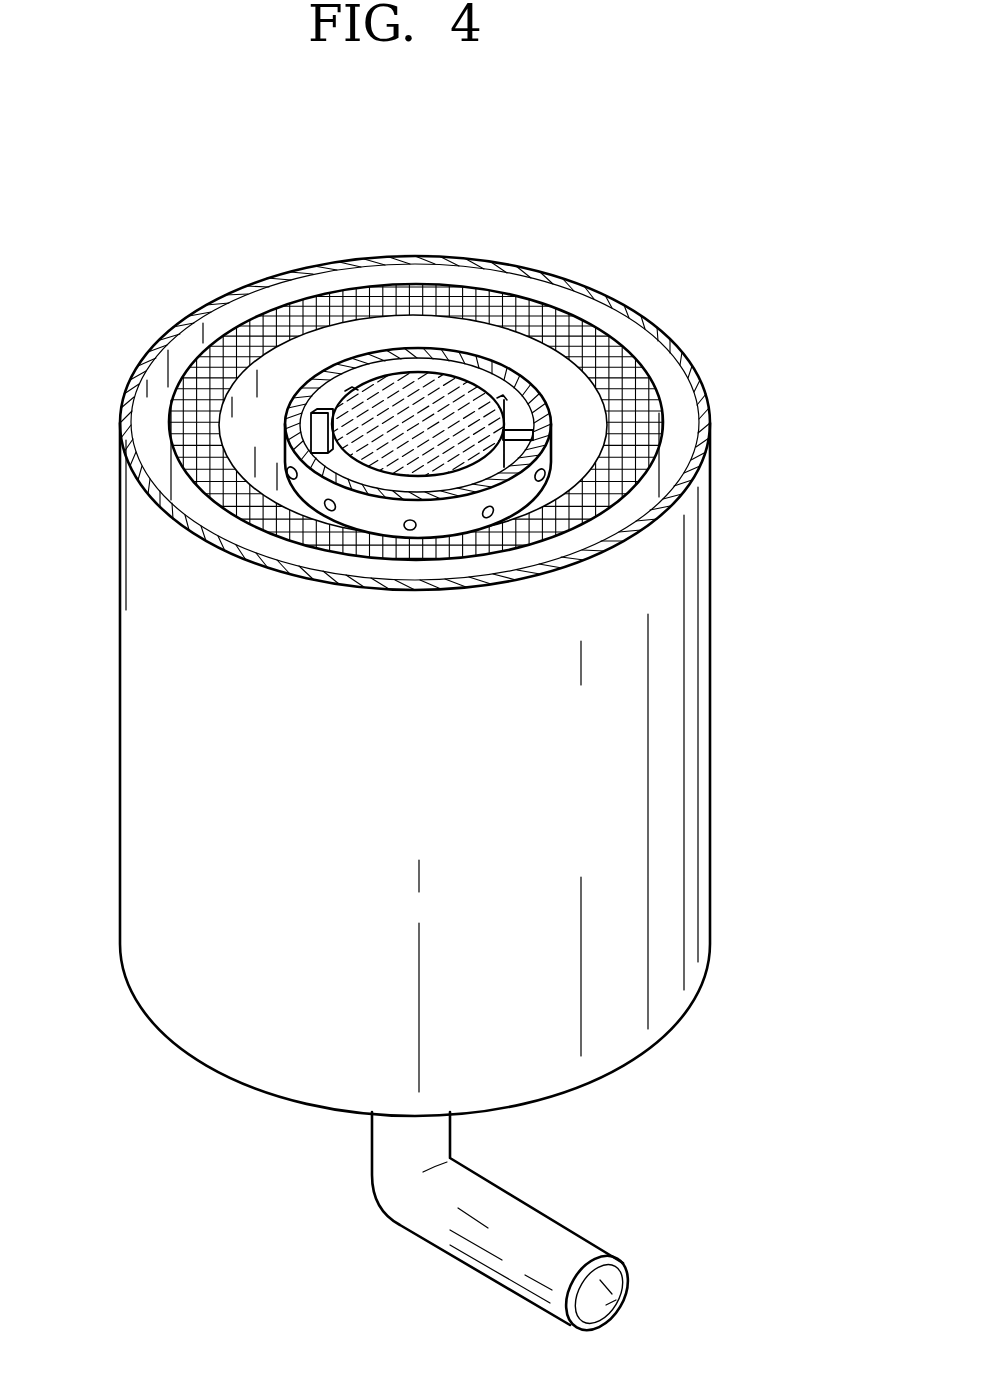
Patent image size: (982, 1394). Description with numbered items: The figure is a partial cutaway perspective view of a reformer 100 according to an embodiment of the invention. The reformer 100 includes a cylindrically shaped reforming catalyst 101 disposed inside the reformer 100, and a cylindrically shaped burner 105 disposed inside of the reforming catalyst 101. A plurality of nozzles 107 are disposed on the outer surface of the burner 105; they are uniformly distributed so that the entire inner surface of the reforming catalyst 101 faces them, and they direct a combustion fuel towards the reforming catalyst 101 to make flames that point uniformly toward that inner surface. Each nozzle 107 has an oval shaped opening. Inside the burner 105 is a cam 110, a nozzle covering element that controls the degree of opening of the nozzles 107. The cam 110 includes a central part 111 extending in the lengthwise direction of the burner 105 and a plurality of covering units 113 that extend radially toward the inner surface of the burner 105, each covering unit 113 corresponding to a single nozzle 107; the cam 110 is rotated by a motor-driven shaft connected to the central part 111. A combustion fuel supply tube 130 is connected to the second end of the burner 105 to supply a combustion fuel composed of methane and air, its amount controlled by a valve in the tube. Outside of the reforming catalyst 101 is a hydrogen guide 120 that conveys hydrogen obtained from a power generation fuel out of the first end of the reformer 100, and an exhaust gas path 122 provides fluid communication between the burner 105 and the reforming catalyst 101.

The reformer 100 is at (146, 251).
The reforming catalyst 101 is at (640, 400).
The burner 105 is at (463, 350).
The nozzles 107 is at (588, 483).
The cam 110 is at (355, 188).
The central part 111 is at (368, 397).
The covering units 113 is at (313, 412).
The hydrogen guide 120 is at (707, 410).
The exhaust gas path 122 is at (515, 337).
The combustion fuel supply tube 130 is at (570, 1240).